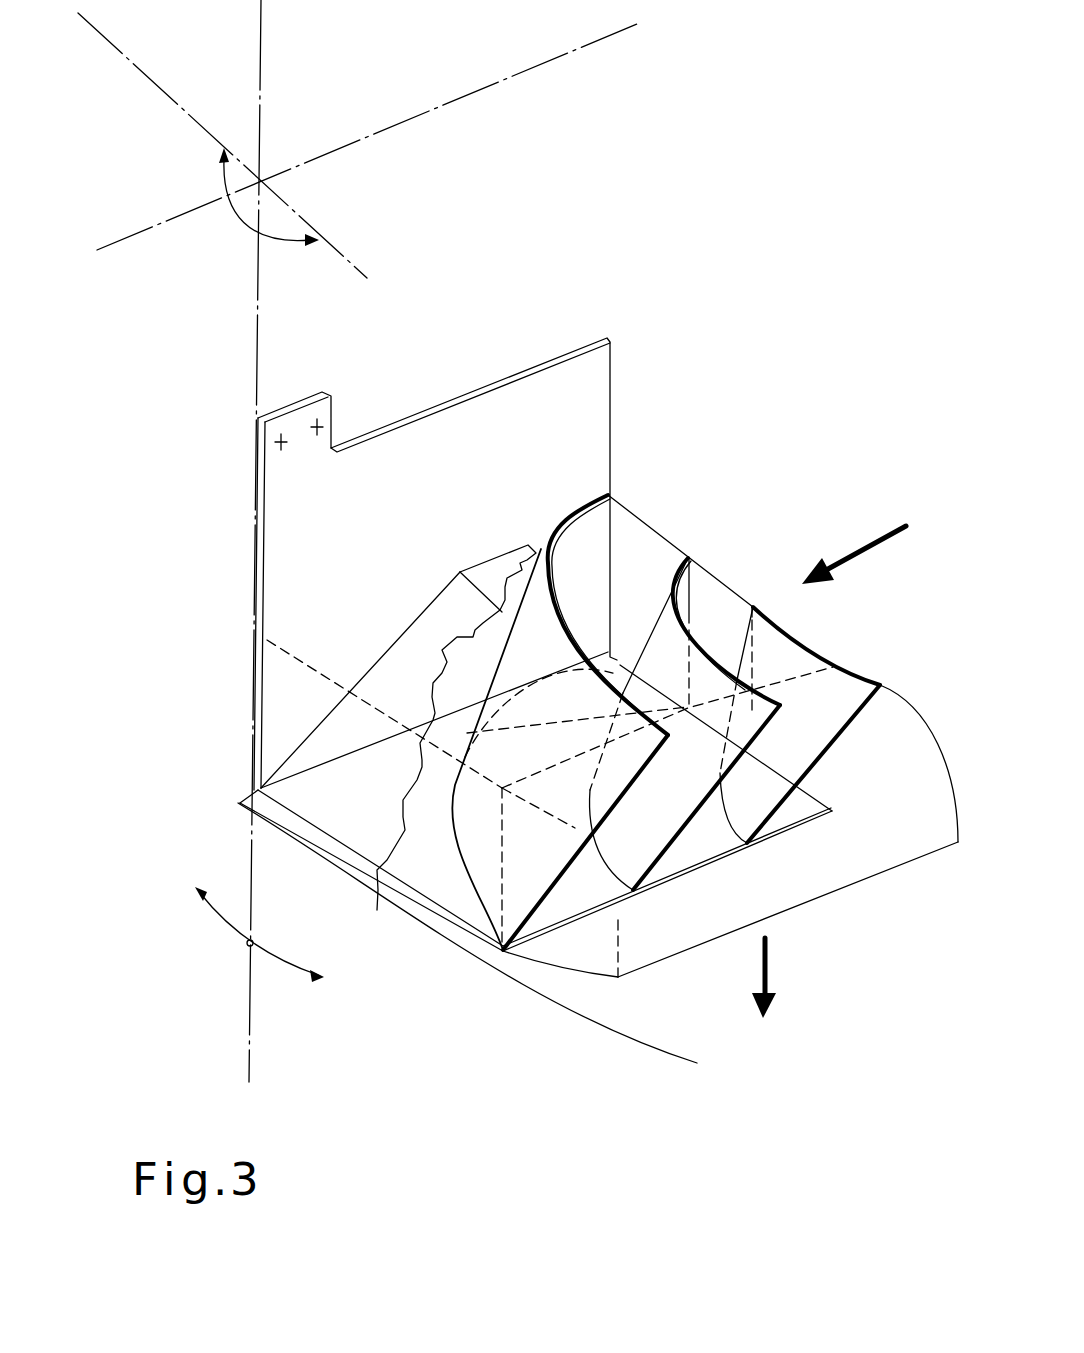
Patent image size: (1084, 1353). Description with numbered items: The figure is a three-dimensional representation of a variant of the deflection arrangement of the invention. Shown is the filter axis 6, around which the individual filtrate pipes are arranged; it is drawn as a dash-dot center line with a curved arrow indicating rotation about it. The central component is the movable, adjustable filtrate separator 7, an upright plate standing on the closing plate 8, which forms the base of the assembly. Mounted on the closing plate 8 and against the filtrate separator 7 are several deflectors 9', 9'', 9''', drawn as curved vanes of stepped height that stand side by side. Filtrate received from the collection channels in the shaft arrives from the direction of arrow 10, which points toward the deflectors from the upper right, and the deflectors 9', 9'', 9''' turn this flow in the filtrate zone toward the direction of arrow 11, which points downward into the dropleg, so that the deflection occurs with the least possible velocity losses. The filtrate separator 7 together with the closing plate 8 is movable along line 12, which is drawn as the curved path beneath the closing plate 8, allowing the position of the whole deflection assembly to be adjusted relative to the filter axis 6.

The filter axis 6 is at (438, 107).
The filtrate separator 7 is at (579, 419).
The closing plate 8 is at (436, 880).
The deflector 9' is at (560, 777).
The deflector 9'' is at (685, 732).
The deflector 9''' is at (815, 725).
The arrow 10 is at (866, 543).
The arrow 11 is at (770, 960).
The line 12 is at (667, 1056).